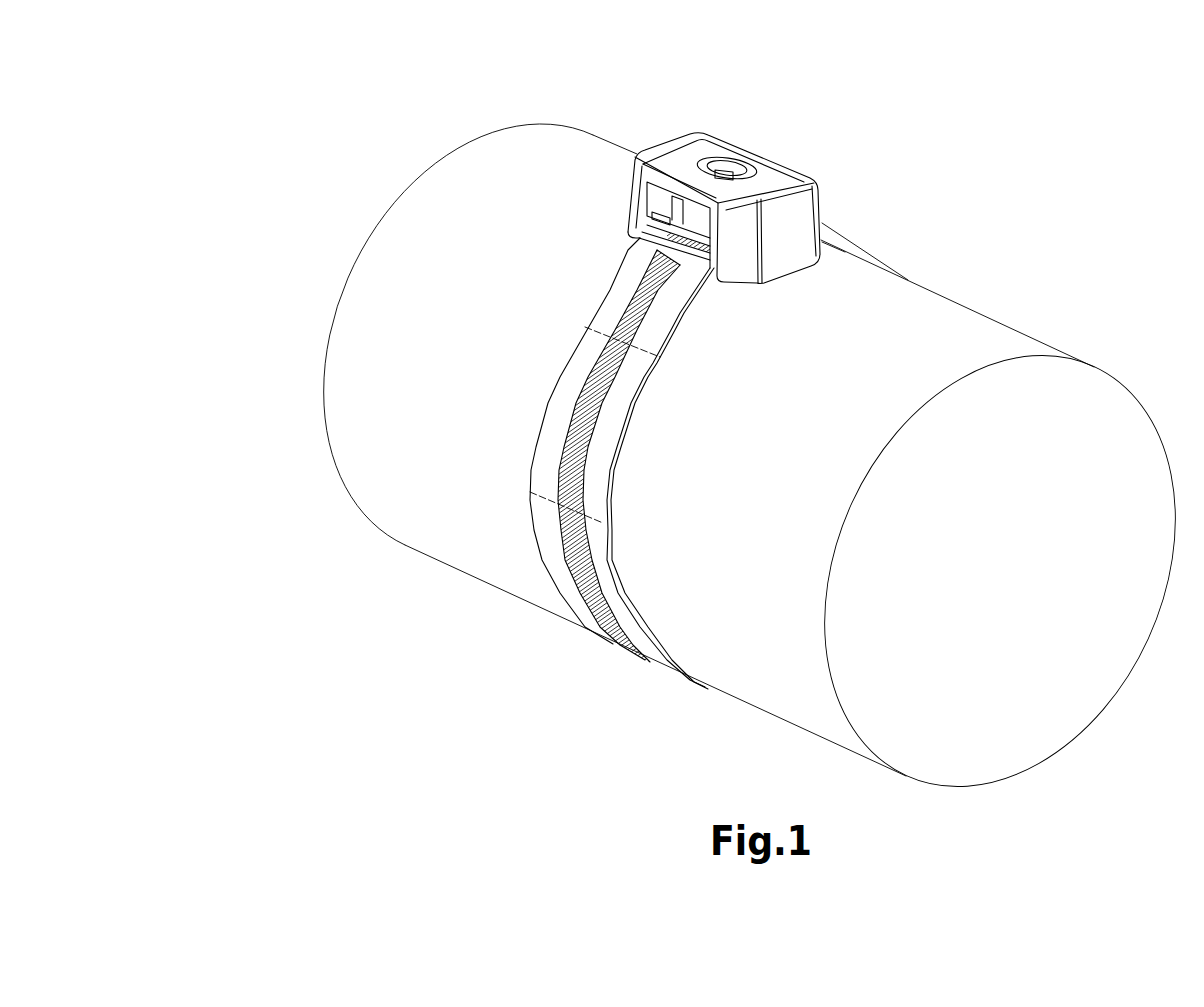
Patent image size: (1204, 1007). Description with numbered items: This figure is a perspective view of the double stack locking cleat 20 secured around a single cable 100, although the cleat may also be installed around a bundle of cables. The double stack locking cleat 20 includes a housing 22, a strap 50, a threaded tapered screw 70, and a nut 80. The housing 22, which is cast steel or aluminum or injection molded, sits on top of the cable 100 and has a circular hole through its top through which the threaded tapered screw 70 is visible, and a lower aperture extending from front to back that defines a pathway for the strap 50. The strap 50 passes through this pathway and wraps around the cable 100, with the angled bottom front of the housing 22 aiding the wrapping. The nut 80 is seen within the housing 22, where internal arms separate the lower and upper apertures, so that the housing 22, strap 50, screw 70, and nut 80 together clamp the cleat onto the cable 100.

The double stack locking cleat 20 is at (639, 158).
The housing 22 is at (790, 232).
The strap 50 is at (580, 357).
The threaded tapered screw 70 is at (704, 166).
The nut 80 is at (698, 214).
The cable 100 is at (950, 338).